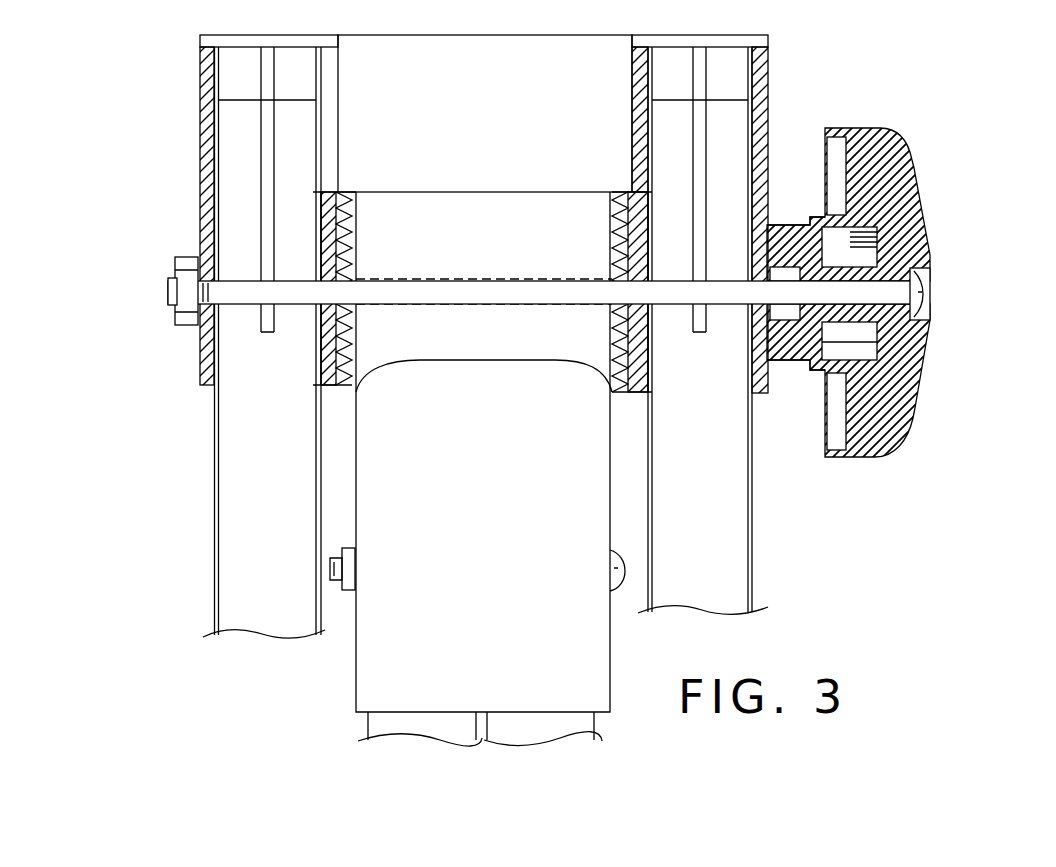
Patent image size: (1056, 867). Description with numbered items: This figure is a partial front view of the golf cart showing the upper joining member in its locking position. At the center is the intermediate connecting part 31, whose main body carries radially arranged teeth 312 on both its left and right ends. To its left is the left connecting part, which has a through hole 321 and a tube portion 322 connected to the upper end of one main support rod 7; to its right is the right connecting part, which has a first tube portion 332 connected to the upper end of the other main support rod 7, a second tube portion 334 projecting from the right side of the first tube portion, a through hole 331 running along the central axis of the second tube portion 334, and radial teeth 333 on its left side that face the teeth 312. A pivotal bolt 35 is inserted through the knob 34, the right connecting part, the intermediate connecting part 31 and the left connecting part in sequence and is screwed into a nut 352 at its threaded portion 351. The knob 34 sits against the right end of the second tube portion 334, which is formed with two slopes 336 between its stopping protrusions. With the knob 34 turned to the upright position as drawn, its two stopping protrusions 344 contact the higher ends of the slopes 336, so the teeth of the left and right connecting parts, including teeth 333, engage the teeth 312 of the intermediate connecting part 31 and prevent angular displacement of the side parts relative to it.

The main support rod 7 is at (760, 566).
The intermediate connecting part 31 is at (478, 195).
The through hole 321 is at (330, 212).
The tube portion 322 is at (202, 385).
The teeth 312 is at (318, 388).
The through hole 331 is at (665, 220).
The first tube portion 332 is at (772, 215).
The teeth 333 is at (655, 352).
The second tube portion 334 is at (830, 128).
The slopes 336 is at (905, 150).
The stopping protrusions 344 is at (920, 207).
The knob 34 is at (923, 243).
The pivotal bolt 35 is at (930, 300).
The threaded portion 351 is at (198, 303).
The nut 352 is at (180, 275).